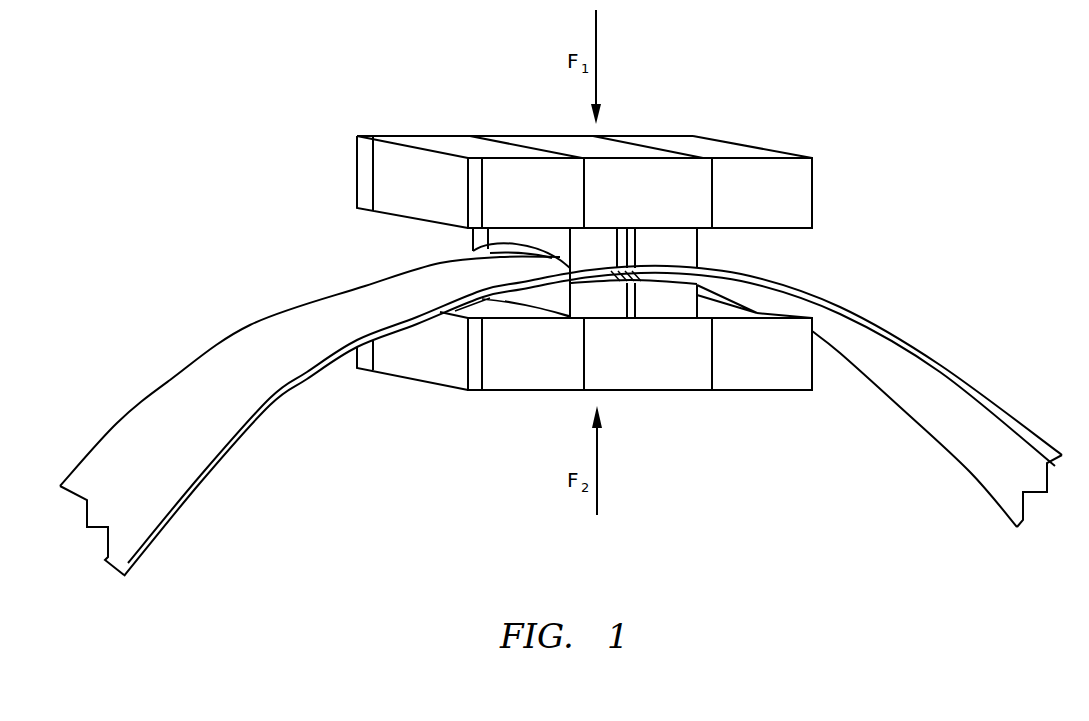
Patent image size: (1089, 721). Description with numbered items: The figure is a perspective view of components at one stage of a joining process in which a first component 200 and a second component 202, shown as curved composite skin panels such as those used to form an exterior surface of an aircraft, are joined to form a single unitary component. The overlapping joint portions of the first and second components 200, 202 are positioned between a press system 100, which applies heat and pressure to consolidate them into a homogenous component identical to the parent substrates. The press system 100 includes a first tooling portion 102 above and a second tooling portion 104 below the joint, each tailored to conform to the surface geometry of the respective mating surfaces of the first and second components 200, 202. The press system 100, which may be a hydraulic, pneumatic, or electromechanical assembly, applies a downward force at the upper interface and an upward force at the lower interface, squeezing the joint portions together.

The press system 100 is at (835, 168).
The first tooling portion 102 is at (598, 243).
The second tooling portion 104 is at (608, 310).
The first component 200 is at (257, 399).
The second component 202 is at (993, 485).